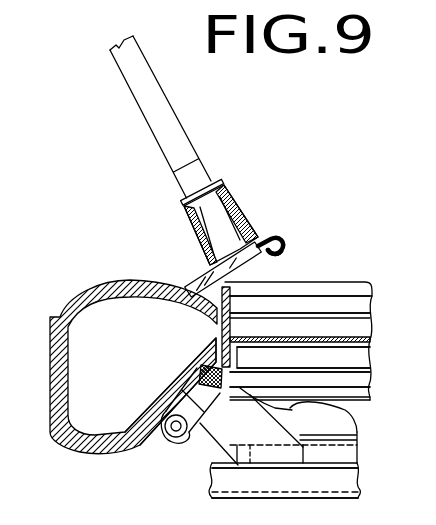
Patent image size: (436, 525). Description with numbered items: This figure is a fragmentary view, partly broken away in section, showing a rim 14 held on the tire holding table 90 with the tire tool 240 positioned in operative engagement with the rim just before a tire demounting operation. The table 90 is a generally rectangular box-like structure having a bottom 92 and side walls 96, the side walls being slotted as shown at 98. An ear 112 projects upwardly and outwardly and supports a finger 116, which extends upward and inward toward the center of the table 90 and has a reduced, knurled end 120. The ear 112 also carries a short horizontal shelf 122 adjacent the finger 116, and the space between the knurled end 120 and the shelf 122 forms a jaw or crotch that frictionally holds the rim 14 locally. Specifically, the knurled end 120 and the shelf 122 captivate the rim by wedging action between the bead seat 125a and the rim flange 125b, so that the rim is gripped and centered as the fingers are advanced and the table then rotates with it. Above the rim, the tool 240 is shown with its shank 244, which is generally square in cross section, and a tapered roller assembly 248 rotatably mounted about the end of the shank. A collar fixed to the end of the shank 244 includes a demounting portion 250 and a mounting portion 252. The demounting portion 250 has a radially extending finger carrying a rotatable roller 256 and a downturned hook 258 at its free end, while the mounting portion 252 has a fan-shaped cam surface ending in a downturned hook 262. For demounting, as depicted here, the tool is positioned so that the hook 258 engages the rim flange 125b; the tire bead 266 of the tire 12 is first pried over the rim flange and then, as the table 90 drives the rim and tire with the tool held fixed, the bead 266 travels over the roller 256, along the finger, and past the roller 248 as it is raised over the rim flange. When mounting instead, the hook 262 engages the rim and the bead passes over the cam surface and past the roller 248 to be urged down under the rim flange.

The tool 240 is at (120, 43).
The shank 244 is at (175, 117).
The tapered roller assembly 248 is at (238, 203).
The demounting portion 250 is at (200, 265).
The mounting portion 252 is at (267, 231).
The downturned hook 262 is at (273, 250).
The rotatable roller 256 is at (193, 277).
The tire 12 is at (63, 312).
The knurled end 120 is at (183, 362).
The tire bead 266 is at (197, 335).
The rim 14 is at (343, 283).
The downturned hook 258 is at (233, 300).
The bead seat 125a is at (245, 353).
The rim flange 125b is at (240, 390).
The finger 116 is at (187, 398).
The ear 112 is at (251, 430).
The shelf 122 is at (267, 408).
The slot 98 is at (350, 453).
The tire holding table 90 is at (208, 477).
The side wall 96 is at (283, 494).
The bottom 92 is at (281, 498).